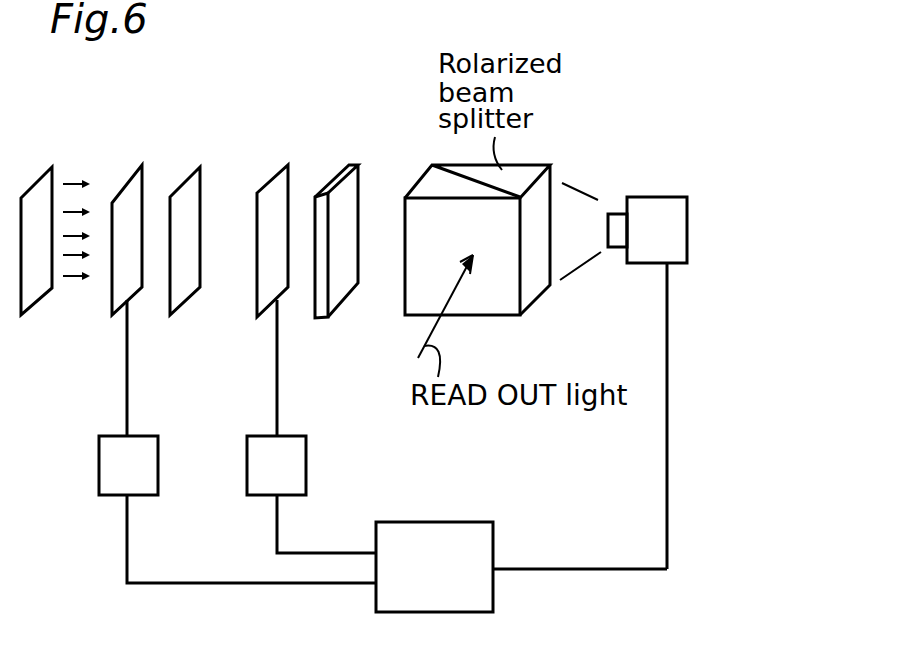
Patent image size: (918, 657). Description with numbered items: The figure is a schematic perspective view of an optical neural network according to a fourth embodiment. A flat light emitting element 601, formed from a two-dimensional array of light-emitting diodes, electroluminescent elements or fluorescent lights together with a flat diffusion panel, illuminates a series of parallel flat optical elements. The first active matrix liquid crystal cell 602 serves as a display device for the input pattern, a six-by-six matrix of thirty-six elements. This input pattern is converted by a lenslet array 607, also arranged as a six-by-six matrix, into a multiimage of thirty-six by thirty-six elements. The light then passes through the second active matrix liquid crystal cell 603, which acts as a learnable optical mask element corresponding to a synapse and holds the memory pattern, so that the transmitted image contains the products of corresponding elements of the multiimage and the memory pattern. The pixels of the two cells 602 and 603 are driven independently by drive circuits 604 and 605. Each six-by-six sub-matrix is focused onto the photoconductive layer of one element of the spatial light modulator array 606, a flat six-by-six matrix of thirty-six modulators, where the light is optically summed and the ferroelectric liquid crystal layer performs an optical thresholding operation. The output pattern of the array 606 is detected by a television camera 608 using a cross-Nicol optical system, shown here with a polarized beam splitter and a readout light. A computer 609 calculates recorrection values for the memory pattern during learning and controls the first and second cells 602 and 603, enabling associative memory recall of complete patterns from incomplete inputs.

The flat light emitting element 601 is at (47, 173).
The first active matrix liquid crystal cell (AM-LC(1)) 602 is at (138, 172).
The lenslet array 607 is at (197, 173).
The second active matrix liquid crystal cell (AM-LC(2)) 603 is at (276, 170).
The spatial light modulator array 606 is at (343, 167).
The television camera 608 is at (653, 202).
The drive circuit 604 is at (99, 468).
The drive circuit 605 is at (247, 458).
The computer 609 is at (438, 533).